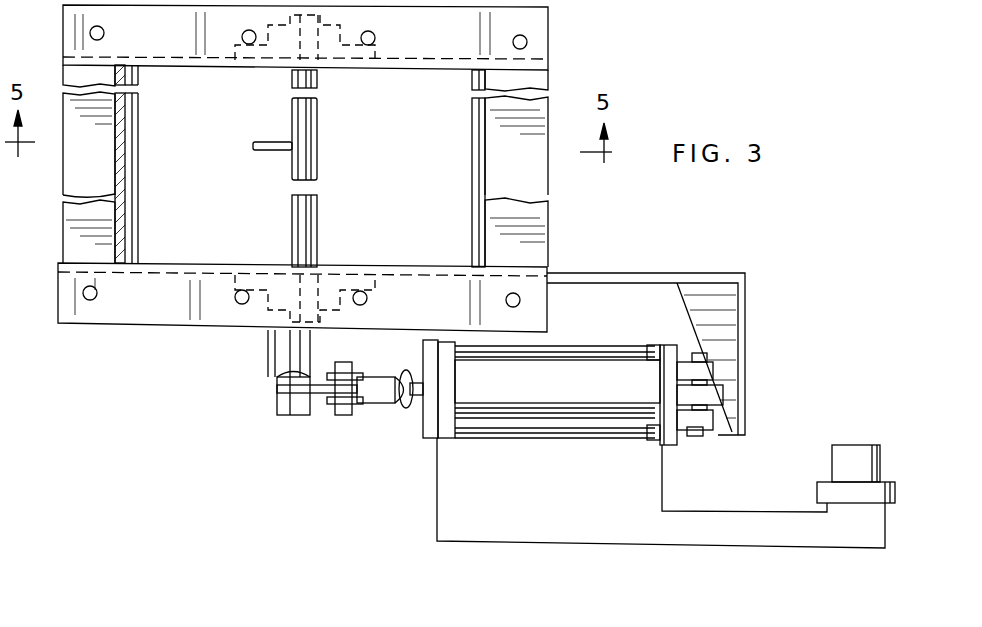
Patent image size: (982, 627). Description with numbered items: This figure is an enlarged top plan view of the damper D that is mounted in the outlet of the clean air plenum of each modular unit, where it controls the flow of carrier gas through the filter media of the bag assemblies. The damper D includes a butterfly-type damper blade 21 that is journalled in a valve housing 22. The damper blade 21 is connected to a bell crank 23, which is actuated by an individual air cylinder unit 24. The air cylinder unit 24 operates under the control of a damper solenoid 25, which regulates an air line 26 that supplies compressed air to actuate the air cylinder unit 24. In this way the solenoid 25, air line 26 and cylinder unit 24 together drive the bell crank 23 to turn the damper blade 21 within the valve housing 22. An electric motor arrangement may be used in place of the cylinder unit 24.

The damper D is at (561, 50).
The damper blade 21 is at (305, 133).
The valve housing 22 is at (121, 138).
The bell crank 23 is at (290, 378).
The air cylinder unit 24 is at (566, 384).
The damper solenoid 25 is at (862, 445).
The air line 26 is at (768, 513).